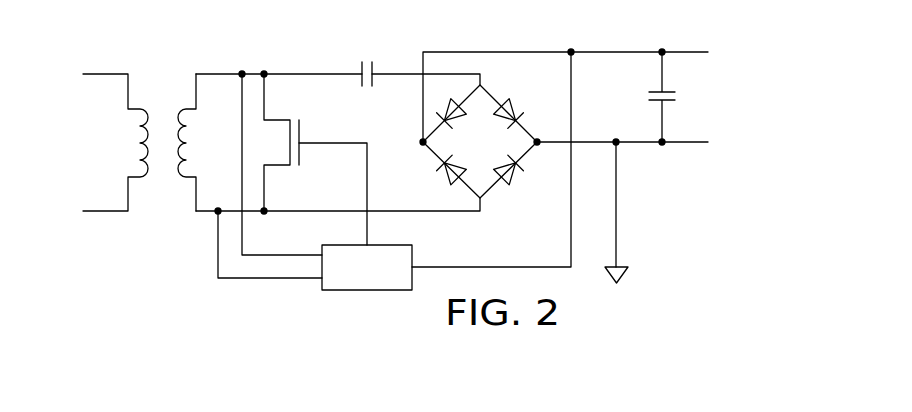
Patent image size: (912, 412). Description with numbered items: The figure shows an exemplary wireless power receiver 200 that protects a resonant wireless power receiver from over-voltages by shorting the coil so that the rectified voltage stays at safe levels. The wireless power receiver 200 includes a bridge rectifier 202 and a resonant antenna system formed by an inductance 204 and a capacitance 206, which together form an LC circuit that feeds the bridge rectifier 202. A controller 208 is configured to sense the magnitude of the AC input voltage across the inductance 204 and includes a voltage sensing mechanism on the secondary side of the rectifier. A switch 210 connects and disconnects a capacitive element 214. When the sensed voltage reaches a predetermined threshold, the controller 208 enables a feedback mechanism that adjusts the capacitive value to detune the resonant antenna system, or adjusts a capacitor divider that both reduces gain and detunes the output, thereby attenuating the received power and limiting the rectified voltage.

The wireless power receiver 200 is at (452, 179).
The bridge rectifier 202 is at (502, 199).
The inductance 204 is at (177, 112).
The capacitance 206 is at (368, 56).
The controller 208 is at (355, 292).
The switch 210 is at (302, 130).
The capacitive element 214 is at (677, 98).